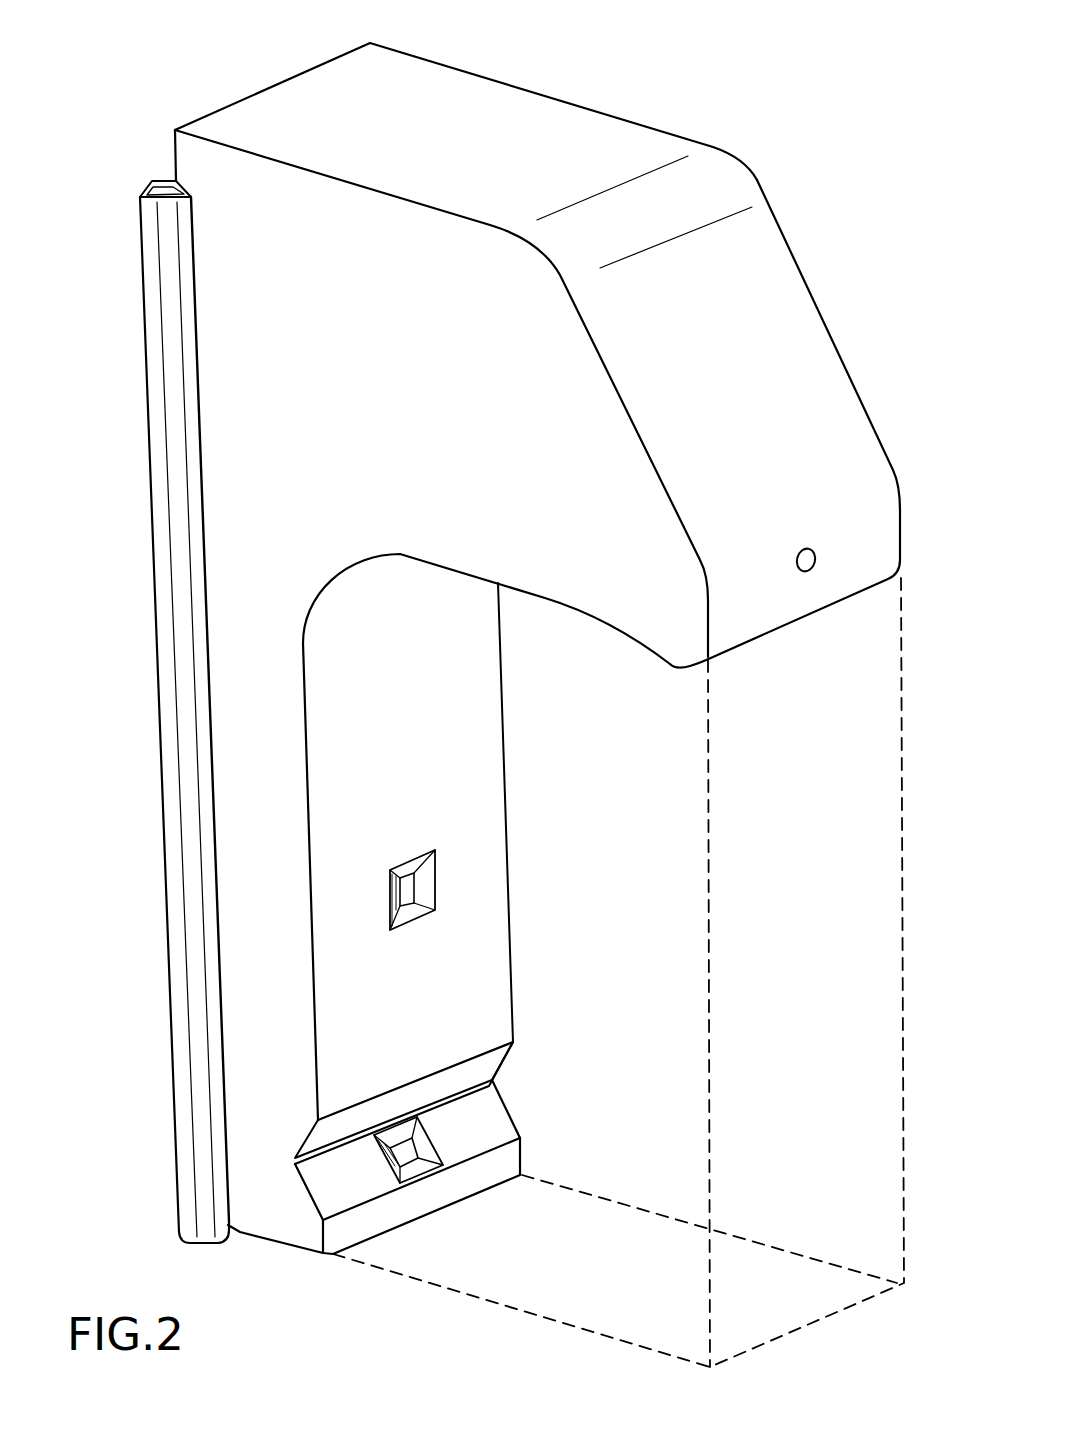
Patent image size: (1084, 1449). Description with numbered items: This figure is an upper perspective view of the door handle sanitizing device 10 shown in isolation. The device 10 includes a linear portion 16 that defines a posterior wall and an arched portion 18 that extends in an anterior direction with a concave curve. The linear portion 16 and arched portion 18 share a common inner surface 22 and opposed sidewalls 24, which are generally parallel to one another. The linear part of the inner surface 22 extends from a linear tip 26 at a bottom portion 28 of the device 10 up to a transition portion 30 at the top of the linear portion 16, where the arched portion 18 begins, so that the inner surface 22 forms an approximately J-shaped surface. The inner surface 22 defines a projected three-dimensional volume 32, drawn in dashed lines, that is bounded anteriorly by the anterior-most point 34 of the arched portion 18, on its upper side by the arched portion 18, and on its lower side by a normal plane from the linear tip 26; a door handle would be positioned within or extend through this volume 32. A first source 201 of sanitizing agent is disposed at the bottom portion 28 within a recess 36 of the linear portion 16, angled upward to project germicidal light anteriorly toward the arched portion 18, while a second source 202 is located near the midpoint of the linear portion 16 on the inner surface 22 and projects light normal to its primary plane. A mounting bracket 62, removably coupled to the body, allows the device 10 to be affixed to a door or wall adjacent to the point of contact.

The door handle sanitizing device 10 is at (636, 106).
The arched portion 18 is at (848, 344).
The sidewalls 24 is at (441, 397).
The anterior-most point 34 is at (800, 620).
The transition portion 30 is at (301, 644).
The inner surface 22 is at (455, 851).
The second source 202 is at (407, 887).
The first source 201 is at (405, 1147).
The linear tip 26 is at (263, 1235).
The recess 36 is at (291, 1157).
The bottom portion 28 is at (165, 1191).
The linear portion 16 is at (212, 767).
The mounting bracket 62 is at (157, 401).
The projected three-dimensional volume 32 is at (900, 875).